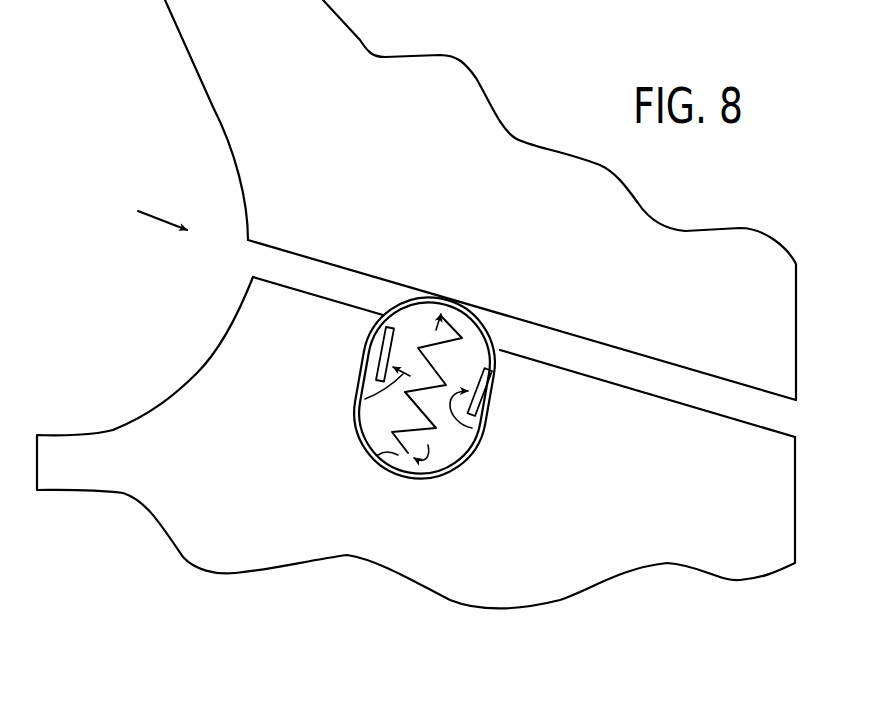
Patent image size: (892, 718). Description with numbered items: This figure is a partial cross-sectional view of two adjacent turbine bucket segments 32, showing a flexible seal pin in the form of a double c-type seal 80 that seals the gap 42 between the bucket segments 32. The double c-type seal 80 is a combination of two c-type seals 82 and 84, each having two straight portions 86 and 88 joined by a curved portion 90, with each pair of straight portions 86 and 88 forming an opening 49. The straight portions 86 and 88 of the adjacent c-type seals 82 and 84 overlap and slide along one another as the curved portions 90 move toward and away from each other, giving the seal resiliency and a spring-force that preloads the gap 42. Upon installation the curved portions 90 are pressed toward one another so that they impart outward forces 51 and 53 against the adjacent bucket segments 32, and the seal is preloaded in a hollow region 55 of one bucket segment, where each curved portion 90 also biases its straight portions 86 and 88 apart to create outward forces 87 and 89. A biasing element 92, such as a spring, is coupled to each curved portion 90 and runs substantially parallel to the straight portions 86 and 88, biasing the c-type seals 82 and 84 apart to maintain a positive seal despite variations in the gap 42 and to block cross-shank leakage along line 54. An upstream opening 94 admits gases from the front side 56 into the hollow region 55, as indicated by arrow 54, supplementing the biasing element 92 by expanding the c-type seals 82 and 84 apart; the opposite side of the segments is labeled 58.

The bucket segments 32 is at (455, 60).
The gap 42 is at (317, 268).
The opening 49 is at (387, 410).
The outward force 51 is at (406, 313).
The outward force 53 is at (428, 448).
The line 54 is at (158, 213).
The hollow region 55 is at (445, 435).
The front side 56 is at (133, 337).
The second portion 58 is at (833, 532).
The double c-type seal 80 is at (468, 505).
The c-type seal 82 is at (447, 285).
The c-type seal 84 is at (333, 495).
The straight portion 86 is at (378, 330).
The outward force 87 is at (365, 400).
The straight portion 88 is at (500, 356).
The outward force 89 is at (450, 433).
The curved portion 90 is at (386, 455).
The biasing element 92 is at (446, 455).
The upstream opening 94 is at (423, 300).